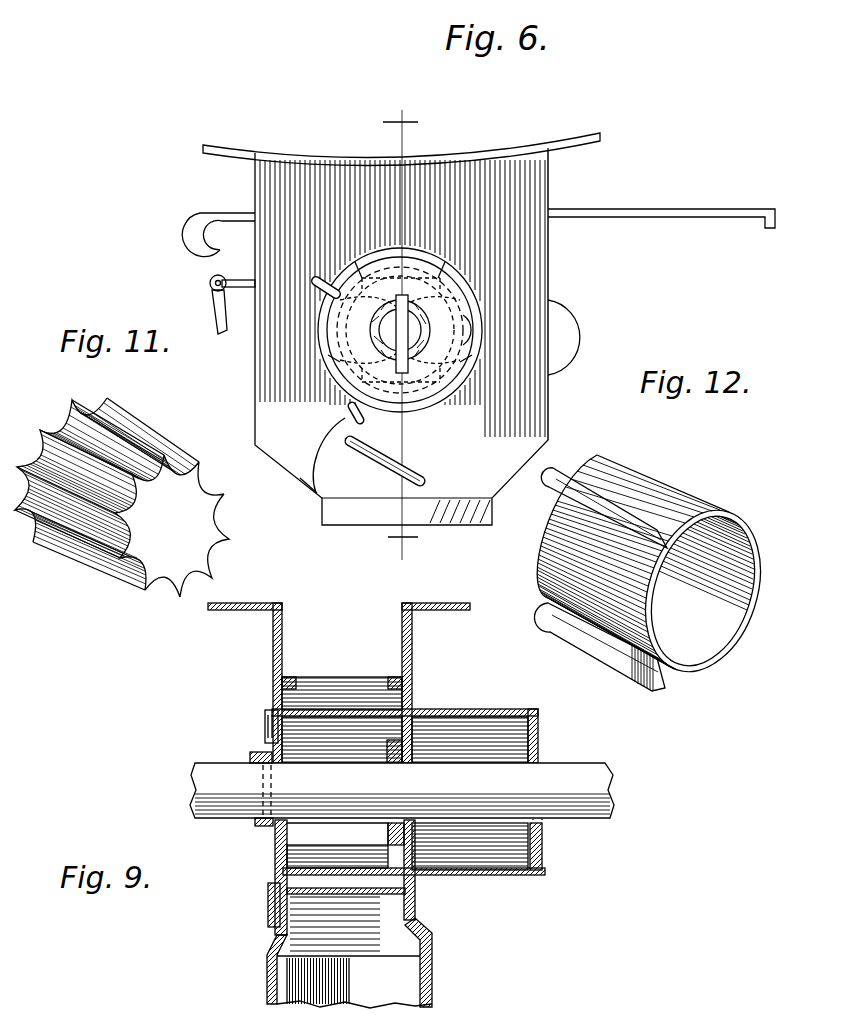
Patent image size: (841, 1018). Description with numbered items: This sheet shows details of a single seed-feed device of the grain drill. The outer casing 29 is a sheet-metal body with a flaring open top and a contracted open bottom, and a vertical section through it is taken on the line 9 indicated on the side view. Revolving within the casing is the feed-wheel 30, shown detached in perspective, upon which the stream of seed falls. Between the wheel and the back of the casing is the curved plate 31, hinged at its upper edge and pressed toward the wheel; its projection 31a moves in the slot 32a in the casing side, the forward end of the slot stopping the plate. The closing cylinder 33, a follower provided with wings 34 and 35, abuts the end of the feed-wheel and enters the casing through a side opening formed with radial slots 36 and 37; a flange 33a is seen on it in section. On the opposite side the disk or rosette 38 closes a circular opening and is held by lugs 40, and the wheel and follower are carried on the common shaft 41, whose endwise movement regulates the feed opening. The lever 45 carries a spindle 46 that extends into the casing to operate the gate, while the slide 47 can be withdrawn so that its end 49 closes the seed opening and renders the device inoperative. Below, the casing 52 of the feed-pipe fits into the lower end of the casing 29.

In FIG. 6, the section line 9— 9 is at (400, 332).
In FIG. 6, the outer casing 29 is at (283, 185).
In FIG. 9, the outer casing 29 is at (408, 891).
In FIG. 11, the feed-wheel 30 is at (125, 565).
In FIG. 9, the feed-wheel 30 is at (285, 708).
In FIG. 9, the curved plate 31 is at (334, 695).
In FIG. 6, the projection 31a is at (365, 437).
In FIG. 6, the slot 32a is at (418, 478).
In FIG. 6, the closing cylinder 33 is at (467, 397).
In FIG. 12, the closing cylinder 33 is at (640, 482).
In FIG. 9, the closing cylinder 33 is at (447, 709).
In FIG. 6, the sleeve flange 33a is at (475, 317).
In FIG. 9, the sleeve flange 33a is at (542, 735).
In FIG. 12, the wing 34 is at (568, 478).
In FIG. 12, the wing 35 is at (632, 663).
In FIG. 6, the slot 36 is at (323, 461).
In FIG. 6, the slot 37 is at (320, 282).
In FIG. 9, the disk or rosette 38 is at (278, 872).
In FIG. 9, the lugs 40 is at (262, 724).
In FIG. 6, the shaft 41 is at (430, 312).
In FIG. 9, the shaft 41 is at (568, 810).
In FIG. 6, the lever 45 is at (222, 310).
In FIG. 6, the spindle 46 is at (210, 276).
In FIG. 6, the slide 47 is at (222, 212).
In FIG. 9, the slide 47 is at (413, 678).
In FIG. 6, the end of the slide 49 is at (698, 196).
In FIG. 9, the casing 52 is at (427, 994).